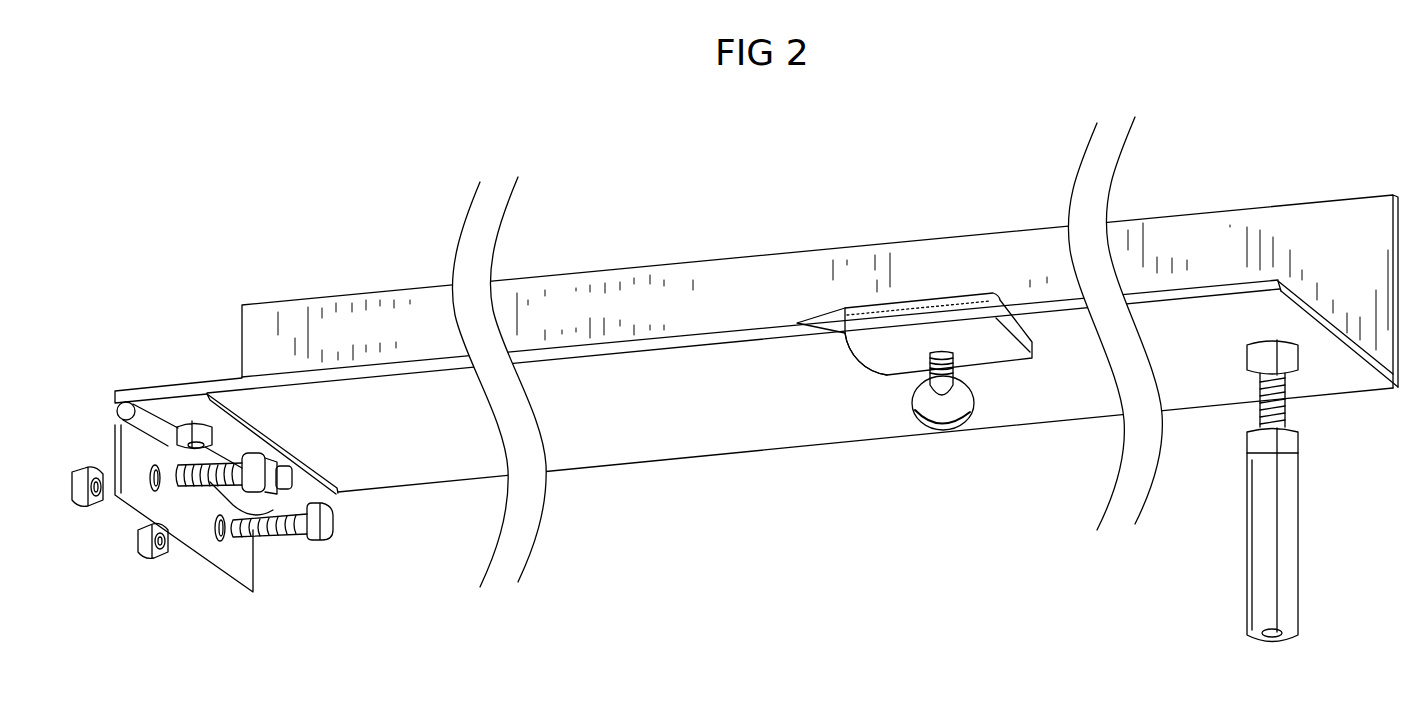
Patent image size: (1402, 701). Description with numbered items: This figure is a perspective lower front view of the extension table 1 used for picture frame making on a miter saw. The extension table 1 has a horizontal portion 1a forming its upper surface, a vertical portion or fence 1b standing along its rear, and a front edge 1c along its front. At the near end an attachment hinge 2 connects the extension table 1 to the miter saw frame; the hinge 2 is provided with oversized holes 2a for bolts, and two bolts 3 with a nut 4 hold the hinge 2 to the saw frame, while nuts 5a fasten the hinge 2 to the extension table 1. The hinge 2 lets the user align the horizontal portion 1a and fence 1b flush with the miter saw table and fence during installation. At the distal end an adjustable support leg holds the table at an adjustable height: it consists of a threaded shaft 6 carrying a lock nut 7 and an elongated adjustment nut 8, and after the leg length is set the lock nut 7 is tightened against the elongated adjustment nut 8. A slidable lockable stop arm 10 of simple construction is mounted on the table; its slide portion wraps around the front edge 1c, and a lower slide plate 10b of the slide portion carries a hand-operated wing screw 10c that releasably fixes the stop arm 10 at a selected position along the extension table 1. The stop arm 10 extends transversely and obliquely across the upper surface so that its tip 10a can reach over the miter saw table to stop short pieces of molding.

The extension table 1 is at (756, 365).
The horizontal portion of extension table 1a is at (670, 409).
The vertical portion or fence of extension table 1b is at (1366, 259).
The front edge of extension table 1c is at (384, 371).
The attachment hinge 2 is at (133, 497).
The oversized hole for bolt 2a is at (218, 540).
The bolt for attaching hinge to miter saw frame 3 is at (283, 530).
The nut 4 is at (88, 468).
The nut for attaching hinge to extension table 5a is at (188, 427).
The threaded shaft of adjustable support leg 6 is at (1280, 410).
The lock nut 7 is at (1247, 353).
The elongated adjustment nut of support leg 8 is at (1288, 541).
The slidable lockable stop arm 10 is at (914, 315).
The tip of stop arm 10a is at (822, 312).
The lower slide plate of stop arm 10b is at (878, 356).
The wing screw 10c is at (940, 418).